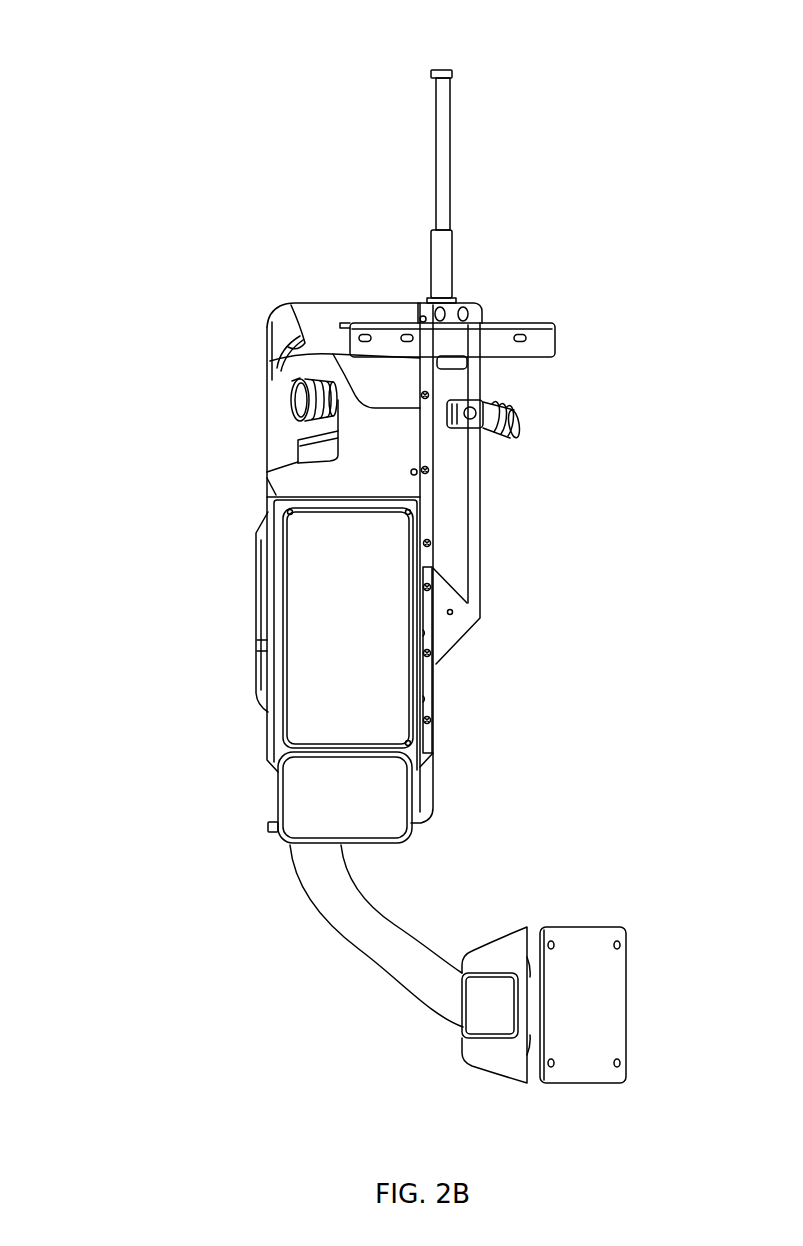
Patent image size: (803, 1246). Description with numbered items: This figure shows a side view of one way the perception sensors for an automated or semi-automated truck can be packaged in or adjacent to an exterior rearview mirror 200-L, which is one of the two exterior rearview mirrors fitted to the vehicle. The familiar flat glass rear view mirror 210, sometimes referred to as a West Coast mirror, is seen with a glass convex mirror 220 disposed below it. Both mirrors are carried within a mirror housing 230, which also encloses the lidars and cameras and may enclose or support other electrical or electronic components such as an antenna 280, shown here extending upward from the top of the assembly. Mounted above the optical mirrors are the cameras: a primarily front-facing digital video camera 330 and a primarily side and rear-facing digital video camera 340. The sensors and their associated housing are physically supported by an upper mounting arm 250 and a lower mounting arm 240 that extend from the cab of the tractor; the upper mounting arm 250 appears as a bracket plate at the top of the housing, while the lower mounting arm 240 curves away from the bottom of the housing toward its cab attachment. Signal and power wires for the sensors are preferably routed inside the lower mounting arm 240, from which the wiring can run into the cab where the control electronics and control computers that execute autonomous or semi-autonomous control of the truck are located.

The exterior rearview mirror 200-L is at (181, 60).
The antenna 280 is at (449, 137).
The upper mounting arm 250 is at (537, 324).
The side and rear-facing digital video camera 340 is at (292, 406).
The front-facing digital video camera 330 is at (520, 425).
The mirror housing 230 is at (257, 607).
The flat glass mirror 210 is at (298, 712).
The convex mirror 220 is at (292, 795).
The lower mounting arm 240 is at (352, 948).